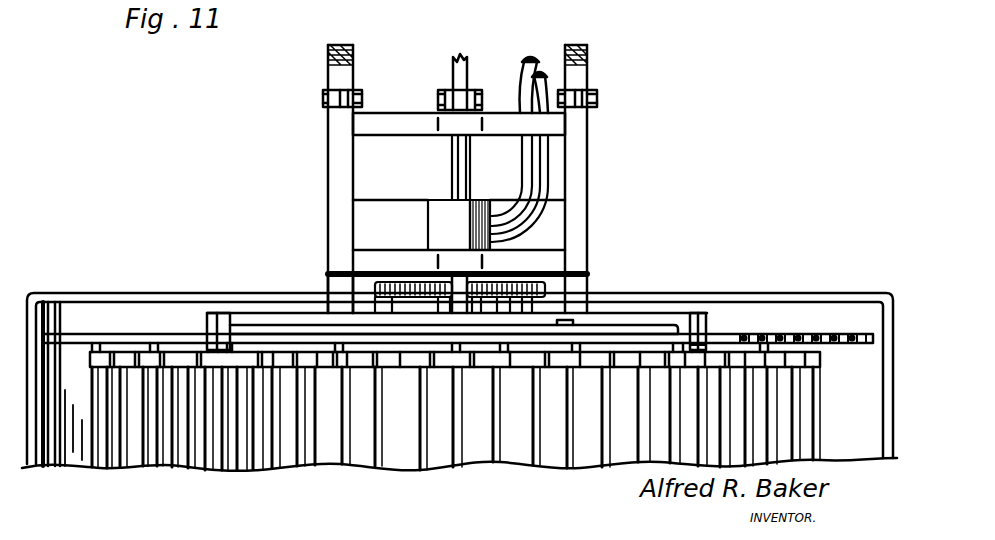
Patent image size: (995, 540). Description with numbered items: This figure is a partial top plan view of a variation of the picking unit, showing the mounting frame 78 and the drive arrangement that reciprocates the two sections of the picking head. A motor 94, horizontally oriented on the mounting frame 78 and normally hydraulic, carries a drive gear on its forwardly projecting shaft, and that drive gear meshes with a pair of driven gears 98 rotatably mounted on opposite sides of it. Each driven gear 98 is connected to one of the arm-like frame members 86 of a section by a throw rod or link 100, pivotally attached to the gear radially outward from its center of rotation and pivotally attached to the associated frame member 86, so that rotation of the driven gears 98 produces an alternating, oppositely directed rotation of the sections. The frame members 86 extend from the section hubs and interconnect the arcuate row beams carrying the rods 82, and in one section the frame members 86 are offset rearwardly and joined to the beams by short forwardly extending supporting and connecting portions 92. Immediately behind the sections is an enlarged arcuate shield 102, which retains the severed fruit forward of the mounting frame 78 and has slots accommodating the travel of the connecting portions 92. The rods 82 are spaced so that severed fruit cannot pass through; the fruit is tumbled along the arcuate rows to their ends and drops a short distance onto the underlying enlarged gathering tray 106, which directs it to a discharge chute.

The mounting frame 78 is at (590, 183).
The motor 94 is at (435, 220).
The throw rod or link 100 is at (427, 273).
The driven gear 98 is at (548, 299).
The frame member 86 is at (190, 347).
The gathering tray 106 is at (760, 315).
The supporting and connecting portion 92 is at (700, 350).
The arcuate shield 102 is at (767, 335).
The rods 82 is at (424, 461).